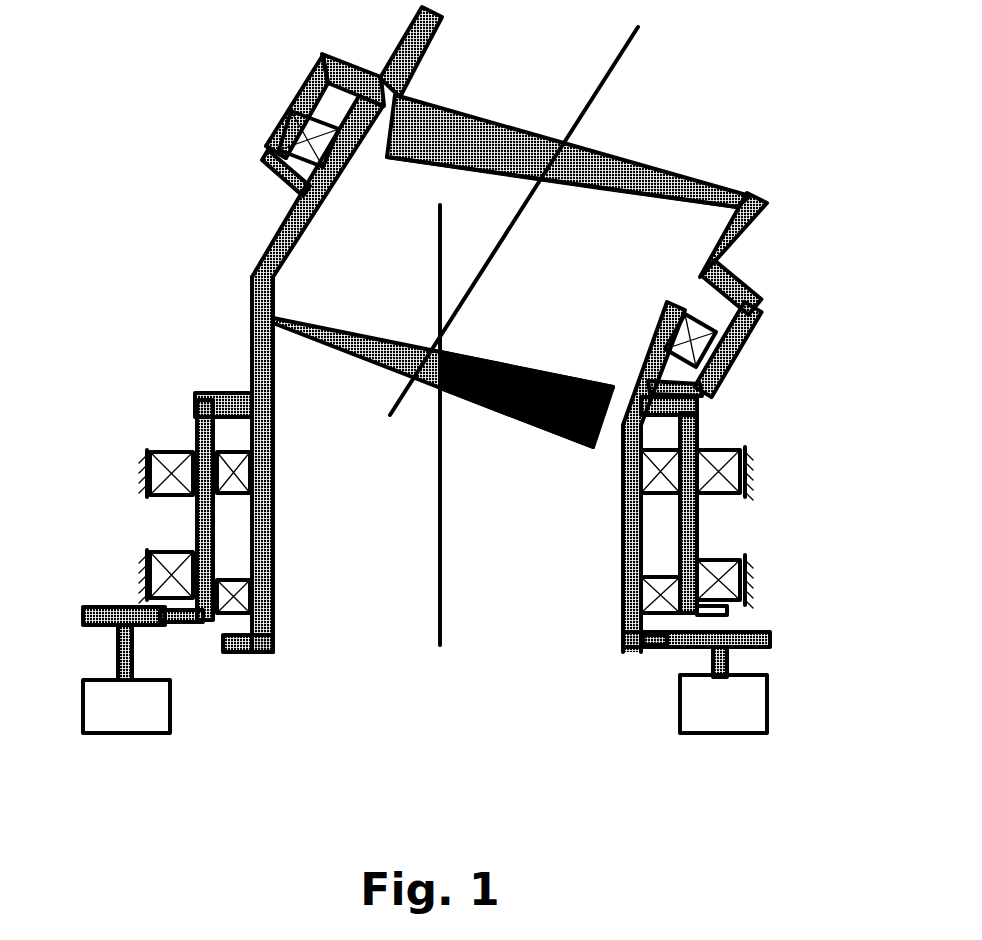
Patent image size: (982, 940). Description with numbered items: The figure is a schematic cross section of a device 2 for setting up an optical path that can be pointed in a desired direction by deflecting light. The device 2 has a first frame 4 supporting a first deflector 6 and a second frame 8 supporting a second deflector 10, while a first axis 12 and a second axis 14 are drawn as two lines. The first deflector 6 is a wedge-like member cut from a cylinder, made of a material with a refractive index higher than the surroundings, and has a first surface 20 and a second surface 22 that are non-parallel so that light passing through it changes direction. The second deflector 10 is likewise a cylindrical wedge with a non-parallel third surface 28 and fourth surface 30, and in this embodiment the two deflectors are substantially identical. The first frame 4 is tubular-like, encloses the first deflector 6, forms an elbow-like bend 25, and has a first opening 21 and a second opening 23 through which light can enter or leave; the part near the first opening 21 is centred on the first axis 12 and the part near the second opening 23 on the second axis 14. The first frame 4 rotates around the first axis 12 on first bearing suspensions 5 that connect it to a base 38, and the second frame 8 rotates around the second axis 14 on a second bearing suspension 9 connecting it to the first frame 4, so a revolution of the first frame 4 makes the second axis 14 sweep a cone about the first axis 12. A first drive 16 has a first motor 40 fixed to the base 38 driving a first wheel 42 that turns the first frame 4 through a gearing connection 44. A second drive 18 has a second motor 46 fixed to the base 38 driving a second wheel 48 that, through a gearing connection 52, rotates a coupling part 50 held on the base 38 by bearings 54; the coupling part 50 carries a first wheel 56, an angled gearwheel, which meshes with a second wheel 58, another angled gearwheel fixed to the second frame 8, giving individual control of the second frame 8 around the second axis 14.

The device 2 is at (150, 160).
The first frame 4 is at (252, 353).
The first bearing suspensions 5 is at (250, 468).
The first deflector 6 is at (548, 447).
The second frame 8 is at (302, 83).
The second bearing suspension 9 is at (280, 122).
The second deflector 10 is at (430, 122).
The first axis 12 is at (438, 630).
The second axis 14 is at (610, 67).
The first drive 16 is at (693, 693).
The second drive 18 is at (170, 705).
The first surface 20 is at (340, 352).
The first opening 21 is at (470, 640).
The second surface 22 is at (373, 327).
The second opening 23 is at (527, 270).
The elbow-like bend 25 is at (252, 273).
The third surface 28 is at (583, 180).
The fourth surface 30 is at (660, 173).
The base 38 is at (97, 482).
The first motor 40 is at (708, 717).
The first wheel 42 is at (760, 630).
The gearing connection 44 is at (667, 650).
The second motor 46 is at (98, 722).
The second wheel 48 is at (95, 610).
The coupling part 50 is at (190, 437).
The gearing connection 52 is at (163, 622).
The bearings 54 is at (150, 455).
The first wheel 56 is at (207, 393).
The second wheel 58 is at (280, 187).